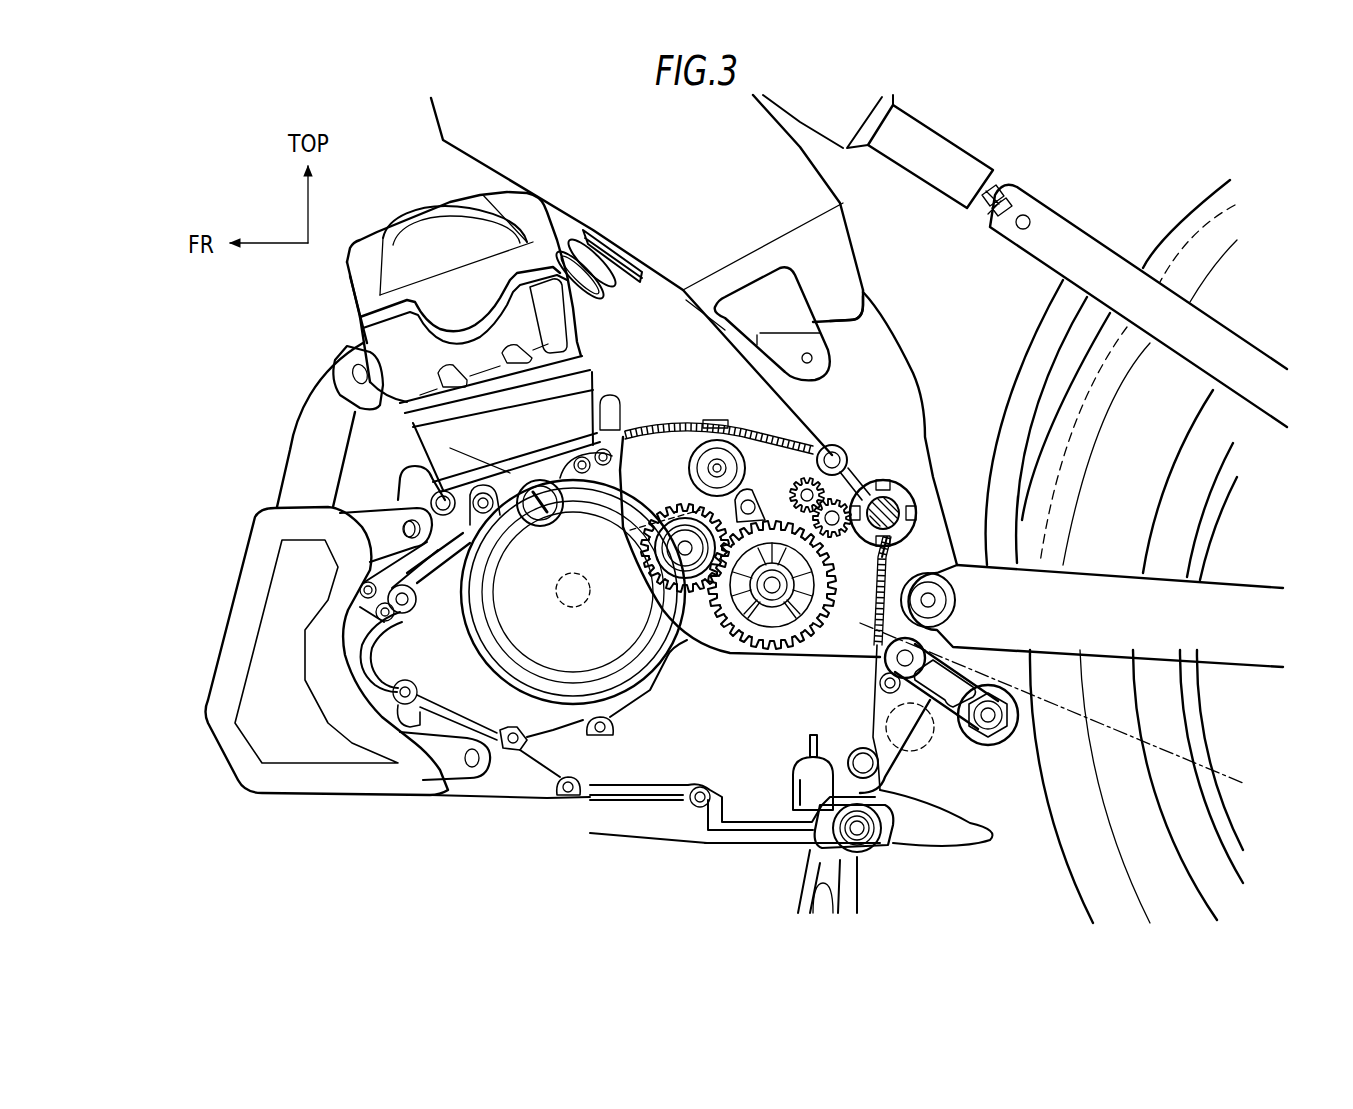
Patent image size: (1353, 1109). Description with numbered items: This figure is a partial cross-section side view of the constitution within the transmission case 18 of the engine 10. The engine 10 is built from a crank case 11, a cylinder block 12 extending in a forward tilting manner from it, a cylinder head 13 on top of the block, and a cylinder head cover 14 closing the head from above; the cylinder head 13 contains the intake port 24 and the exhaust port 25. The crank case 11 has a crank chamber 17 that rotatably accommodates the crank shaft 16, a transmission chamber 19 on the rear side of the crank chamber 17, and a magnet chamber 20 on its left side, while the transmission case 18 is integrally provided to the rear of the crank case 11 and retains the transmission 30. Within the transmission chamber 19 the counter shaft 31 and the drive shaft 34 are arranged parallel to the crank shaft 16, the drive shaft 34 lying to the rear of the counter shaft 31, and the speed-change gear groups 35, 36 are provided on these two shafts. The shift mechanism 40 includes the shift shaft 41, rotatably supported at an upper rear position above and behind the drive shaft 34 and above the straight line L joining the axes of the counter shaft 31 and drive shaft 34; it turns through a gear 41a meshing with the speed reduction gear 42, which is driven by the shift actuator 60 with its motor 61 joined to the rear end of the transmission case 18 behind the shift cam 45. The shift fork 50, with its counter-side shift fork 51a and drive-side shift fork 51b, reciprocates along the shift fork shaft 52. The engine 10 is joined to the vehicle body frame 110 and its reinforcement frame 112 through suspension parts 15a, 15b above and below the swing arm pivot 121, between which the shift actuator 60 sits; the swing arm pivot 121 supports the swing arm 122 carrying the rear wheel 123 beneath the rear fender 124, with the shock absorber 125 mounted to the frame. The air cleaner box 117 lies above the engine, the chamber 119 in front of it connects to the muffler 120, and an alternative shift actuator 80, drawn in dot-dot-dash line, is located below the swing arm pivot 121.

The engine 10 is at (197, 297).
The crank case 11 is at (347, 650).
The cylinder block 12 is at (412, 451).
The cylinder head 13 is at (345, 333).
The cylinder head cover 14 is at (333, 269).
The suspension part 15a is at (880, 422).
The suspension part 15b is at (888, 767).
The crank shaft 16 is at (572, 607).
The crank chamber 17 is at (527, 683).
The transmission case 18 is at (750, 428).
The transmission chamber 19 is at (677, 463).
The magnet chamber 20 is at (630, 672).
The intake port 24 is at (590, 262).
The exhaust port 25 is at (345, 413).
The transmission 30 is at (690, 557).
The counter shaft 31 is at (727, 517).
The drive shaft 34 is at (774, 592).
The speed-change gear group 35 is at (649, 503).
The speed-change gear group 36 is at (856, 579).
The shift mechanism 40 is at (762, 418).
The shift shaft 41 is at (800, 478).
The gear 41a is at (832, 446).
The speed reduction gear 42 is at (840, 505).
The shift cam 45 is at (707, 453).
The shift fork 50 is at (760, 877).
The counter-side shift fork 51a is at (740, 560).
The drive-side shift fork 51b is at (752, 585).
The shift fork shaft 52 is at (753, 500).
The shift actuator 60 is at (916, 472).
The motor 61 is at (913, 513).
The shift actuator 80 is at (942, 749).
The vehicle body frame 110 is at (867, 350).
The reinforcement frame 112 is at (846, 308).
The air cleaner box 117 is at (468, 108).
The chamber 119 is at (333, 795).
The muffler 120 is at (872, 871).
The swing arm pivot 121 is at (942, 600).
The swing arm 122 is at (1242, 597).
The rear wheel 123 is at (1080, 872).
The rear fender 124 is at (1180, 223).
The shock absorber 125 is at (842, 120).
The straight line L is at (1213, 773).